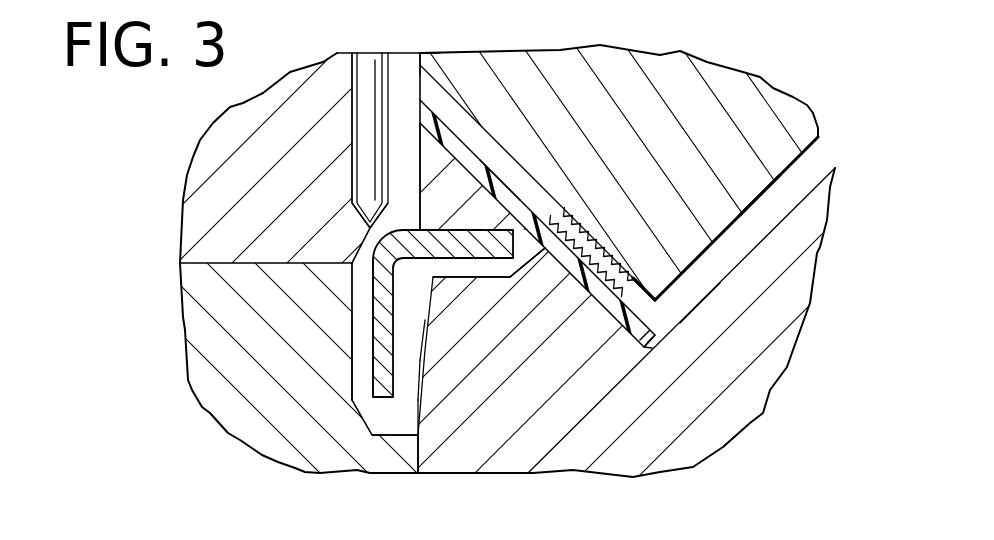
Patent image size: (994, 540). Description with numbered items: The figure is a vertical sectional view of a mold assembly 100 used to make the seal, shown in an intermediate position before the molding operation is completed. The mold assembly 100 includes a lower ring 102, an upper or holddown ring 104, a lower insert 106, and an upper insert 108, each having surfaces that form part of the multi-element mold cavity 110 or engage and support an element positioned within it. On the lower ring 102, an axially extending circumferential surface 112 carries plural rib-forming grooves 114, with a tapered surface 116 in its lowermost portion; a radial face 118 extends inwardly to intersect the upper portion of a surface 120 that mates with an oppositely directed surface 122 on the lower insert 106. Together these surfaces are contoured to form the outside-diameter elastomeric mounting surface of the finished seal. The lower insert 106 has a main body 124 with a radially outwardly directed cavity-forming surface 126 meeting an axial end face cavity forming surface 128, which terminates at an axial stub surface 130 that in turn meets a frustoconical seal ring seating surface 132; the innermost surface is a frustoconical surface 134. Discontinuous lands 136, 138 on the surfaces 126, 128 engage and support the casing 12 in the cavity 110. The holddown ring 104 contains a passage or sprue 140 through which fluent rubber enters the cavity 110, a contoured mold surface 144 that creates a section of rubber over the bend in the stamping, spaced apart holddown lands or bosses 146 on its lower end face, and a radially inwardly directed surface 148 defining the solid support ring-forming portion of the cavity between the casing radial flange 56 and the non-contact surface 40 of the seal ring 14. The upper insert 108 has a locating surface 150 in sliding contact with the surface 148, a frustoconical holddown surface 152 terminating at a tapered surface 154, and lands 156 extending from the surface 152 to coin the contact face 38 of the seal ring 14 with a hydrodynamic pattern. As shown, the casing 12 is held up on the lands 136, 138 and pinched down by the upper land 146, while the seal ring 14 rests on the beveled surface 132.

The mold assembly 100 is at (783, 61).
The lower ring 102 is at (299, 418).
The upper or holddown ring 104 is at (296, 143).
The lower insert 106 is at (787, 328).
The upper insert 108 is at (700, 100).
The multi-element mold cavity 110 is at (466, 310).
The axially extending circumferential surface 112 is at (352, 318).
The rib-forming grooves 114 is at (350, 328).
The tapered surface 116 is at (383, 423).
The radial face 118 is at (398, 438).
The mating surface 120 is at (420, 463).
The oppositely directed surface 122 is at (412, 435).
The main body 124 is at (639, 421).
The radially outwardly directed cavity-forming surface 126 is at (415, 345).
The axial end face cavity forming surface 128 is at (470, 262).
The axial stub surface 130 is at (545, 270).
The frustoconical seal ring seating surface 132 is at (608, 248).
The frustoconical surface 134 is at (693, 300).
The discontinuous land 136 is at (405, 385).
The discontinuous land 138 is at (520, 263).
The passage or sprue 140 is at (356, 127).
The contoured mold surface 144 is at (363, 250).
The holddown lands or bosses 146 is at (385, 215).
The radially inwardly directed surface 148 is at (425, 163).
The locating surface 150 is at (420, 56).
The frustoconical holddown surface 152 is at (618, 262).
The tapered surface 154 is at (732, 225).
The lands 156 is at (655, 330).
The casing 12 is at (355, 278).
The seal ring 14 is at (560, 212).
The contact face 38 is at (585, 250).
The non-contact surface 40 is at (493, 200).
The casing radial flange 56 is at (430, 262).